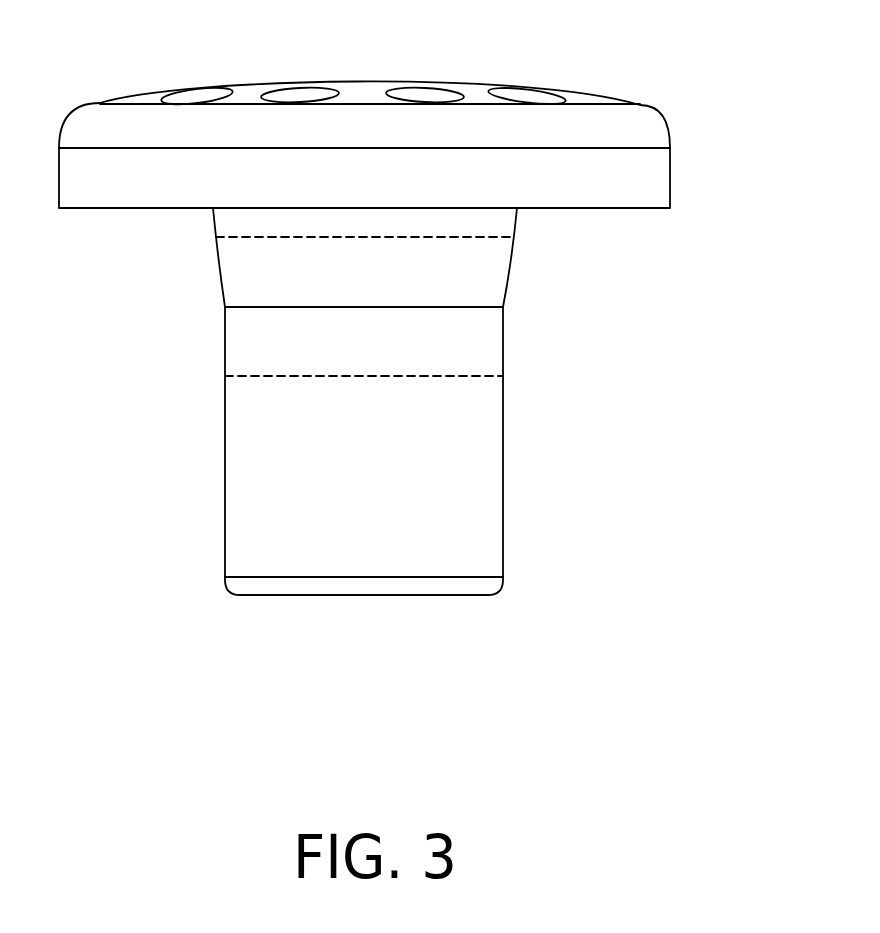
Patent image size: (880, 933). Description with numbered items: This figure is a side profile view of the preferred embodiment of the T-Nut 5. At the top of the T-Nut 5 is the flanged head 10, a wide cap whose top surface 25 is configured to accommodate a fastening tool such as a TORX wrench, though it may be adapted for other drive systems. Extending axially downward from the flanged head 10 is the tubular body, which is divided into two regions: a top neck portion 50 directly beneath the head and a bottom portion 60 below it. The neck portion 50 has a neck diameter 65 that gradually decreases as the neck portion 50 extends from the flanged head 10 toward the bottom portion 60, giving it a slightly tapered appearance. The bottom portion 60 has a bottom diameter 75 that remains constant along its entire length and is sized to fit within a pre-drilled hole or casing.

The T-Nut 5 is at (134, 413).
The flanged head 10 is at (690, 146).
The top surface 25 is at (365, 93).
The top neck portion 50 is at (660, 217).
The bottom portion 60 is at (667, 306).
The neck diameter 65 is at (612, 237).
The bottom diameter 75 is at (612, 376).